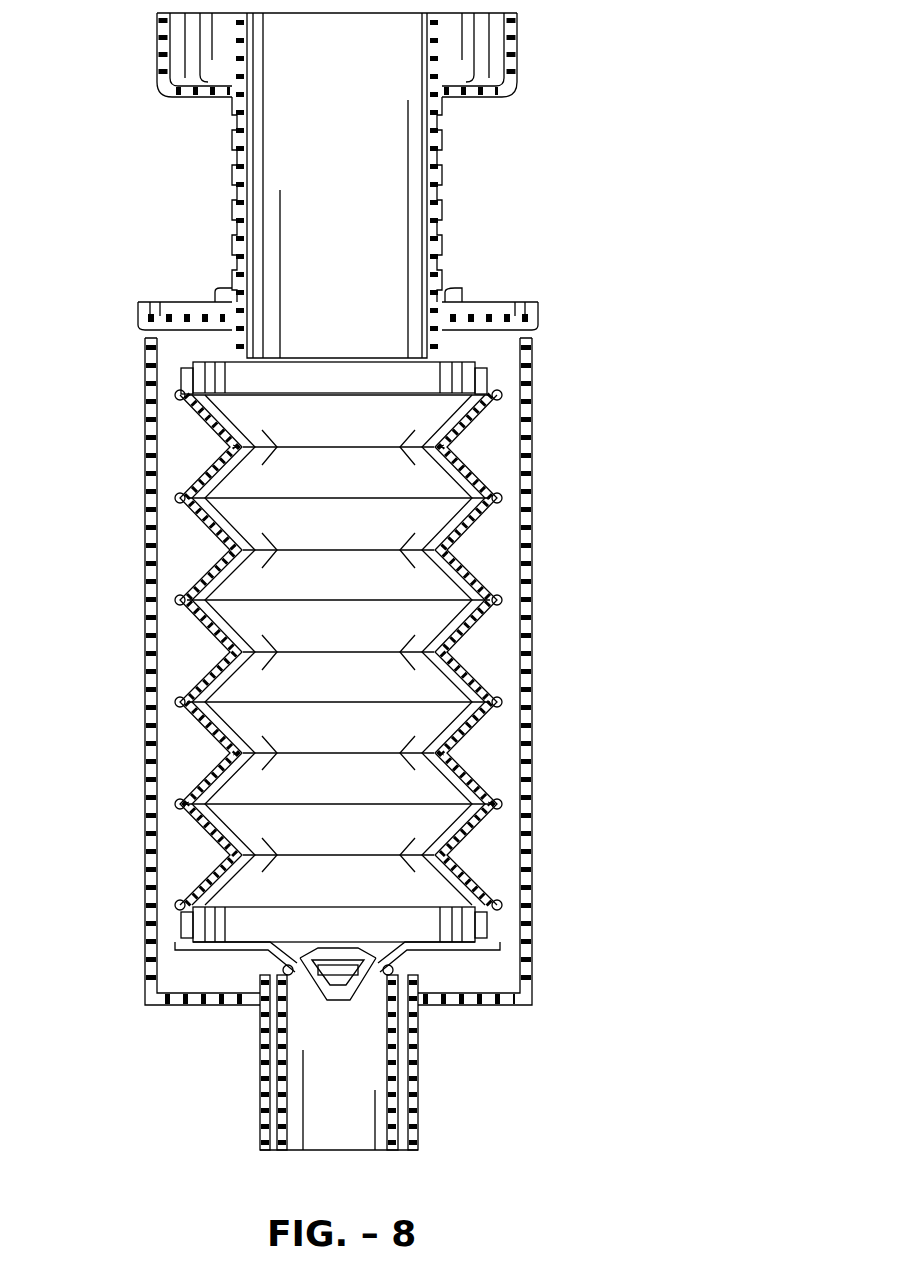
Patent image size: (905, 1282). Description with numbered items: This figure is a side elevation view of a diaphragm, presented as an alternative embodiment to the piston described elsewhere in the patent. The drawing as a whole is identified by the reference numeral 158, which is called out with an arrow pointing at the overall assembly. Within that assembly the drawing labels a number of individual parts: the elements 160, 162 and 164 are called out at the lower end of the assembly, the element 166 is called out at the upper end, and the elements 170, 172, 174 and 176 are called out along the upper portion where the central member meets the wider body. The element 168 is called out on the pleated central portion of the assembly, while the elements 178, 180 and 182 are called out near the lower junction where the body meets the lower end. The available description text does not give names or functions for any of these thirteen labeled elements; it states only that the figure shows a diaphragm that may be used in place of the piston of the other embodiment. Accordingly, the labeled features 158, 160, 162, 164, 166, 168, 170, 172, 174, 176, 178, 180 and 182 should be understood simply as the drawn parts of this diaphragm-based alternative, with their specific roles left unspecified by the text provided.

The pump assembly 158 is at (643, 225).
The outlet nozzle 160 is at (283, 1020).
The outlet opening 162 is at (310, 1145).
The inner outlet tube 164 is at (385, 1020).
The inlet cap 166 is at (512, 46).
The bellows 168 is at (468, 620).
The inlet tube 170 is at (445, 181).
The retaining lip 172 is at (215, 318).
The left flange 174 is at (138, 312).
The right flange 176 is at (465, 352).
The housing base 178 is at (398, 1000).
The valve 180 is at (290, 968).
The seal ring 182 is at (284, 974).